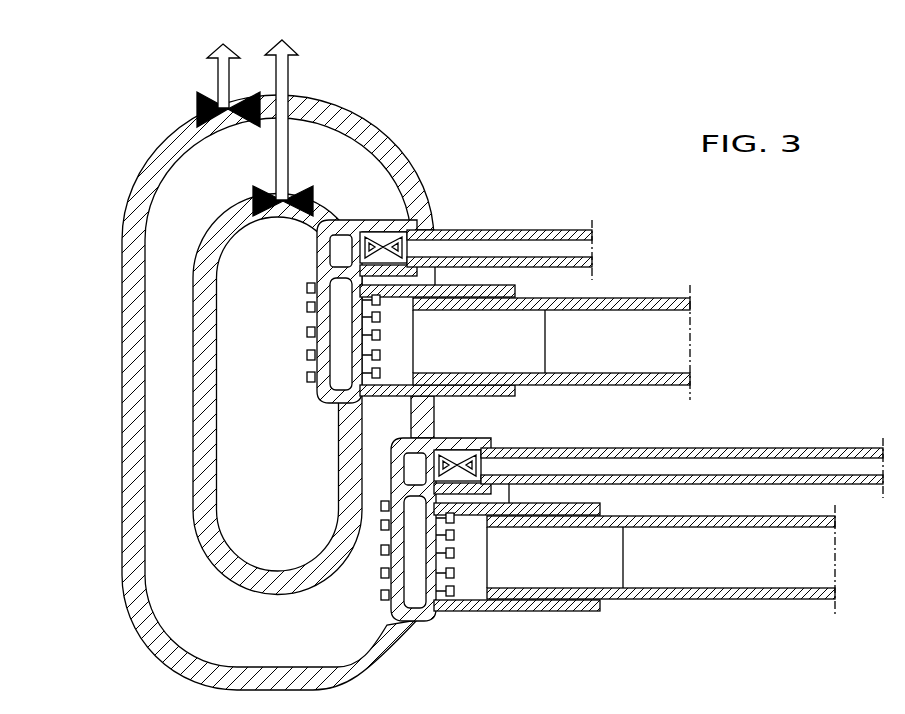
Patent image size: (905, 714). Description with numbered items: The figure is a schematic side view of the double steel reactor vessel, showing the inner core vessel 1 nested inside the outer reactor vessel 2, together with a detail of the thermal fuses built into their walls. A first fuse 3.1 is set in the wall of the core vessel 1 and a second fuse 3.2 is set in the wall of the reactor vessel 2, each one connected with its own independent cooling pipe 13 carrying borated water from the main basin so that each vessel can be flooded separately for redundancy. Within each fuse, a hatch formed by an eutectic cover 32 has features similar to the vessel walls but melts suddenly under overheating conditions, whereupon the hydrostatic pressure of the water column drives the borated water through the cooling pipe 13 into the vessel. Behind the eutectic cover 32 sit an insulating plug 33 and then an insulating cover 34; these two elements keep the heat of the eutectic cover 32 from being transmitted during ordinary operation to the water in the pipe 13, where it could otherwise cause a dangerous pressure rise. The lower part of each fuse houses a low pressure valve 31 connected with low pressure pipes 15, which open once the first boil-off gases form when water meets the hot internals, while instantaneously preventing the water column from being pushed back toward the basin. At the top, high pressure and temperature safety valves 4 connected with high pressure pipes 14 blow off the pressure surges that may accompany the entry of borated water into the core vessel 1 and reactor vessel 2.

The core vessel 1 is at (200, 330).
The reactor vessel 2 is at (128, 213).
The high pressure and temperature safety valves 4 is at (253, 195).
The high pressure pipes 14 is at (283, 62).
The first fuse 3.1 is at (345, 215).
The second fuse 3.2 is at (437, 617).
The low pressure valve 31 is at (398, 232).
The eutectic cover 32 is at (410, 300).
The insulating plug 33 is at (385, 358).
The insulating cover 34 is at (528, 335).
The cooling pipe 13 is at (657, 310).
The low pressure pipes 15 is at (578, 230).